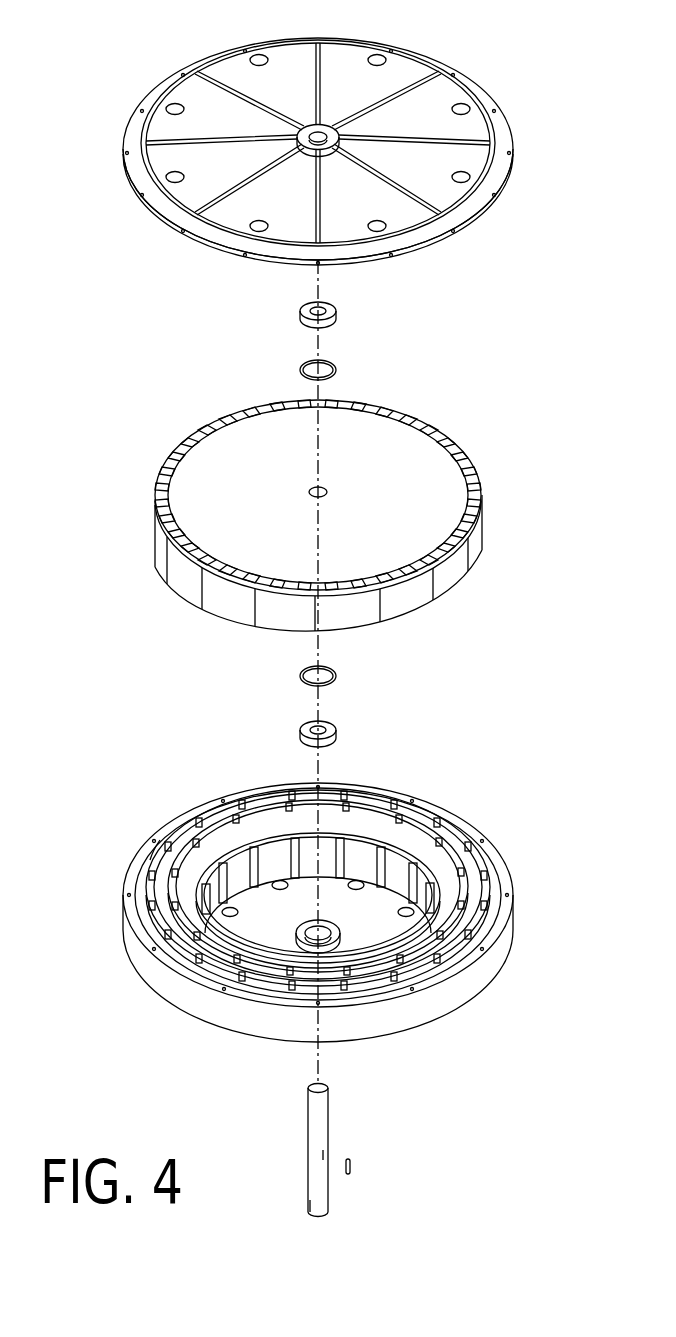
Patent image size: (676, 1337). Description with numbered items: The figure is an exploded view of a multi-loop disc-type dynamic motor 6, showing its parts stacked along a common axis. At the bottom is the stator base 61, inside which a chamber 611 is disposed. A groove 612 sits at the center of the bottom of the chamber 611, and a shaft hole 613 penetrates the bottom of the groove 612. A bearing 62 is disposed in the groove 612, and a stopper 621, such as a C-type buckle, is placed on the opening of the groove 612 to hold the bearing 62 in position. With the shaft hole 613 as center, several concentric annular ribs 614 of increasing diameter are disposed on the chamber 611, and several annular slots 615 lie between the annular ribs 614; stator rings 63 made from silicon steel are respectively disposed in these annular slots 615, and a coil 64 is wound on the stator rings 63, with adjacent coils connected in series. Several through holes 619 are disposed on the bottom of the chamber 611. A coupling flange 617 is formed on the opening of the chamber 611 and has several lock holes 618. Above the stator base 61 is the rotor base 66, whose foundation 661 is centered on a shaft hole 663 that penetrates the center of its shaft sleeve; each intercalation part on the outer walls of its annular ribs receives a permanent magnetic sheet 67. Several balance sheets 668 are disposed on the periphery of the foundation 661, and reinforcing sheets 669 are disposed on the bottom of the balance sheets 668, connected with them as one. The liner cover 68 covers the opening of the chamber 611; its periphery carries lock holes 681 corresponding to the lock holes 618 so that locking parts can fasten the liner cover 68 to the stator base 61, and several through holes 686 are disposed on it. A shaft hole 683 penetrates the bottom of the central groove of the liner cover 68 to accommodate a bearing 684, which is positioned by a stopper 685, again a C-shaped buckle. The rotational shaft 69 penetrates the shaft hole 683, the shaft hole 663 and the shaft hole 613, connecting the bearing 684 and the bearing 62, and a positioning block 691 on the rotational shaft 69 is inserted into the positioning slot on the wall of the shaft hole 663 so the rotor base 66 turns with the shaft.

The multi-loop disc-type dynamic motor 6 is at (155, 368).
The stator base 61 is at (335, 917).
The chamber 611 is at (480, 845).
The groove 612 is at (328, 942).
The shaft hole 613 is at (310, 942).
The annular ribs 614 is at (132, 912).
The annular slots 615 is at (458, 960).
The coupling flange 617 is at (498, 866).
The lock holes 618 is at (510, 895).
The through holes 619 is at (372, 908).
The bearing 62 is at (300, 732).
The stopper 621 is at (336, 677).
The stator rings 63 is at (160, 840).
The coil 64 is at (215, 830).
The rotor base 66 is at (312, 488).
The foundation 661 is at (410, 456).
The shaft hole 663 is at (309, 492).
The balance sheets 668 is at (163, 533).
The reinforcing sheets 669 is at (193, 562).
The permanent magnetic sheet 67 is at (405, 600).
The liner cover 68 is at (334, 134).
The lock holes 681 is at (500, 196).
The shaft hole 683 is at (313, 132).
The bearing 684 is at (336, 312).
The stopper 685 is at (336, 370).
The through holes 686 is at (170, 105).
The rotational shaft 69 is at (316, 1178).
The positioning block 691 is at (352, 1168).